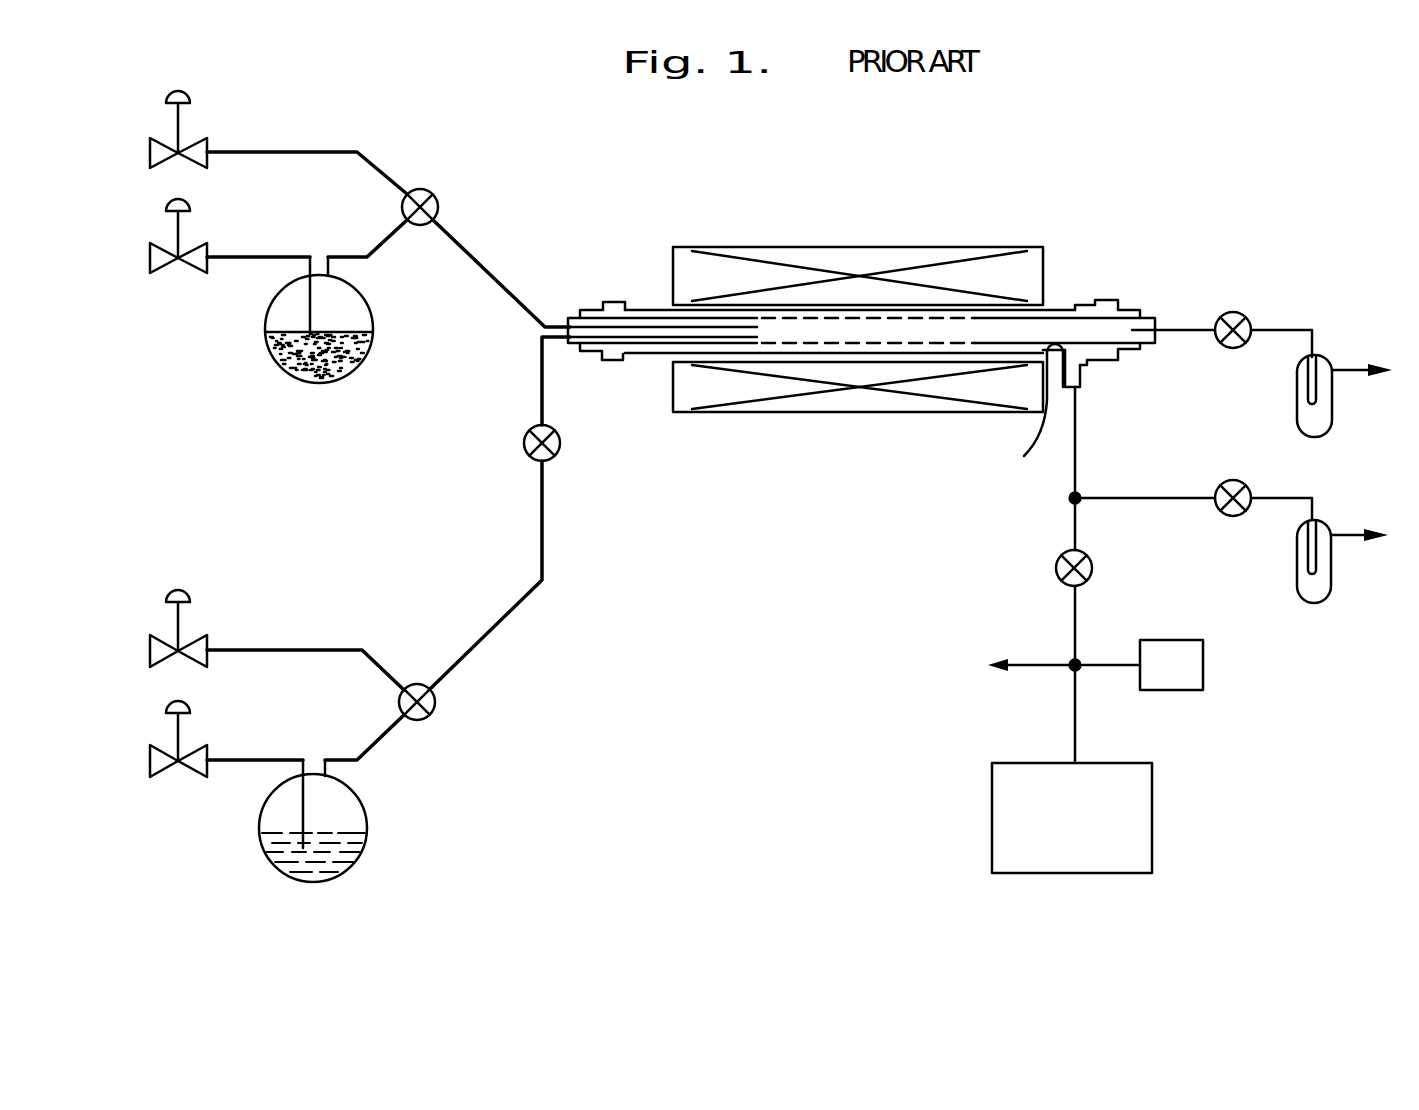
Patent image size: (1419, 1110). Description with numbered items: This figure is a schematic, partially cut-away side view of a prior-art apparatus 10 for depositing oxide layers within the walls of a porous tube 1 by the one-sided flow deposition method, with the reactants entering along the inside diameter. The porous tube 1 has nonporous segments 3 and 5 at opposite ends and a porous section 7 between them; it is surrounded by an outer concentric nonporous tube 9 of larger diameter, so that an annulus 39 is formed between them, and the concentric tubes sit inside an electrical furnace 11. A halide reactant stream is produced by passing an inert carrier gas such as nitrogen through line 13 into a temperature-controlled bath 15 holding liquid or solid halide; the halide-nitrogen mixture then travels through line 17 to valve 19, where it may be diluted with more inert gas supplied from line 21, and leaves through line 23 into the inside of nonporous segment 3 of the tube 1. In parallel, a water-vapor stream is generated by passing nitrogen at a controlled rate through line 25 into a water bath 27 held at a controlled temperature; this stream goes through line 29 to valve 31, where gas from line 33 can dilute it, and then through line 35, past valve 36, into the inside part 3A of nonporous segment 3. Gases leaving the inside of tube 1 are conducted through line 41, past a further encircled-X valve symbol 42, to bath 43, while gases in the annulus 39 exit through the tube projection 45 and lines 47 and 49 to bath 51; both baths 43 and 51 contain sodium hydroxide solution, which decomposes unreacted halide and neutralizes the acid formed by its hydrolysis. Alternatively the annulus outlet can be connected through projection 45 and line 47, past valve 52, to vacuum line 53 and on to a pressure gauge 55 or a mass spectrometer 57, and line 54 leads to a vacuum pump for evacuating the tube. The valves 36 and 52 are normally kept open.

The porous tube 1 is at (913, 313).
The nonporous segment 3 is at (637, 318).
The inside part of nonporous segment 3A is at (645, 330).
The nonporous segment 5 is at (1072, 318).
The porous section 7 is at (840, 318).
The outer concentric nonporous tube 9 is at (645, 360).
The apparatus 10 is at (868, 418).
The electrical furnace 11 is at (773, 262).
The line 13 is at (245, 253).
The bath 15 is at (276, 357).
The line 17 is at (388, 237).
The valve 19 is at (418, 190).
The line 21 is at (276, 149).
The line 23 is at (483, 268).
The line 25 is at (235, 758).
The water bath 27 is at (363, 843).
The line 29 is at (377, 743).
The valve 31 is at (435, 703).
The line 33 is at (289, 650).
The line 35 is at (512, 613).
The valve 36 is at (560, 443).
The annulus 39 is at (1028, 414).
The line 41 is at (1178, 328).
The valve 42 is at (1284, 330).
The bath 43 is at (1325, 422).
The tube projection 45 is at (1083, 383).
The line 47 is at (1078, 462).
The line 49 is at (1280, 498).
The bath 51 is at (1325, 590).
The valve 52 is at (1054, 572).
The vacuum line 53 is at (1075, 627).
The line 54 is at (1038, 663).
The pressure gauge 55 is at (1203, 675).
The mass spectrometer 57 is at (1087, 836).